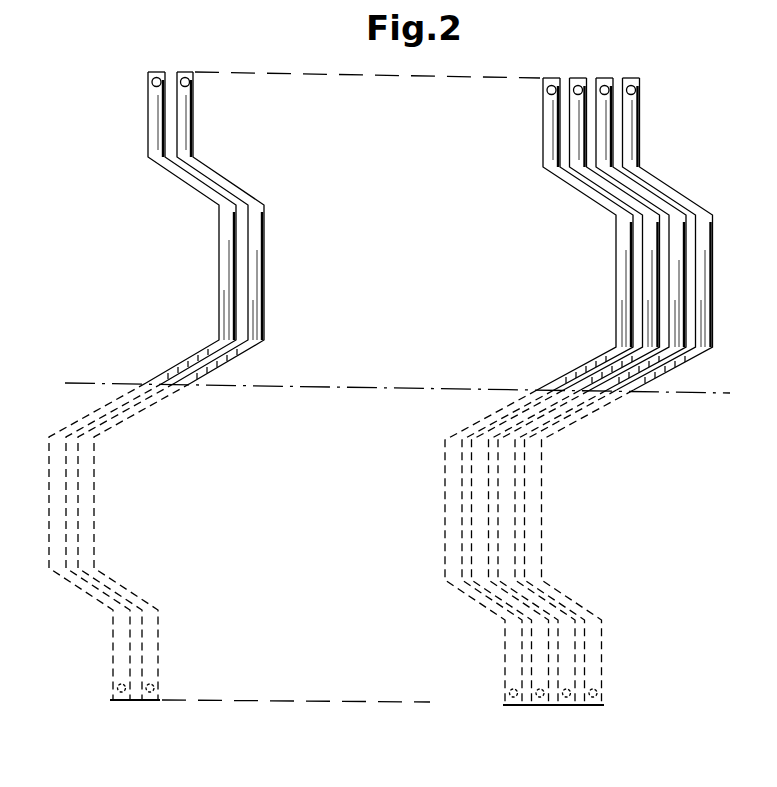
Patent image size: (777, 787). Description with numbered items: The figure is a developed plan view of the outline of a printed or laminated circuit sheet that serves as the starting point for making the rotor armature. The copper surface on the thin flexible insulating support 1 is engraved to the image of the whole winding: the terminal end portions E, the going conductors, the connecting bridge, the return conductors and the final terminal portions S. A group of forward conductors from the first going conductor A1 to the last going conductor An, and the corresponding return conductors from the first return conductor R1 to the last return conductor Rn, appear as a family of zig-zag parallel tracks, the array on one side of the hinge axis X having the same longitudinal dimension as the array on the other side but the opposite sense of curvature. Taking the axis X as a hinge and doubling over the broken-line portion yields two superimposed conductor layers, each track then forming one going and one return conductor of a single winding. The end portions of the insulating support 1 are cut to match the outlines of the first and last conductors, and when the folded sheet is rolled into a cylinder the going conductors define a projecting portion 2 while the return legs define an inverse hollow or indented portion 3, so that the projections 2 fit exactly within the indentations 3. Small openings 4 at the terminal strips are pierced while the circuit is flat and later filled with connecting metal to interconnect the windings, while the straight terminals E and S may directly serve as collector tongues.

The insulating support 1 is at (571, 78).
The projecting portion 2 is at (78, 492).
The hollow or indented portion 3 is at (216, 279).
The small opening 4 is at (552, 78).
The terminal end portion E is at (189, 72).
The last going conductor An is at (226, 223).
The first going conductor A1 is at (713, 230).
The last return conductor Rn is at (62, 428).
The first return conductor R1 is at (530, 530).
The final terminal portion S is at (146, 702).
The hinge axis X is at (397, 377).